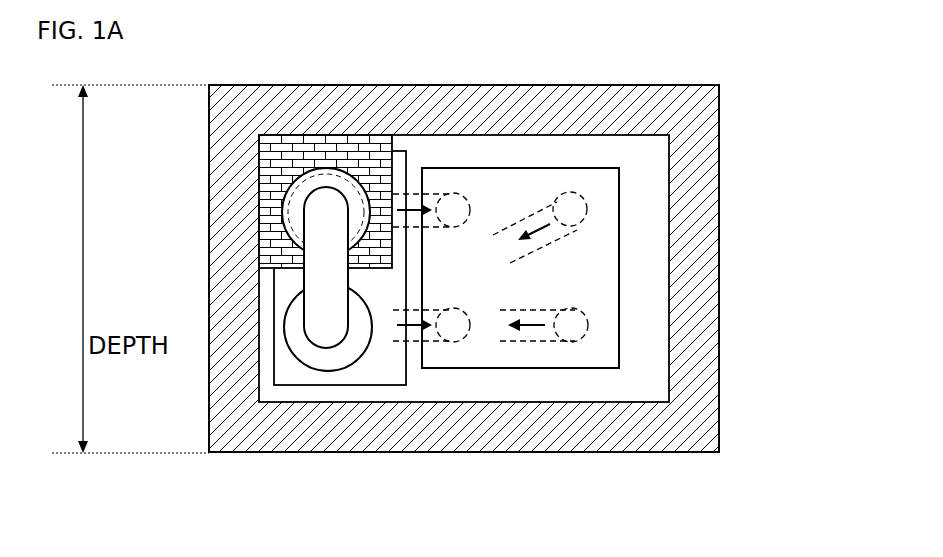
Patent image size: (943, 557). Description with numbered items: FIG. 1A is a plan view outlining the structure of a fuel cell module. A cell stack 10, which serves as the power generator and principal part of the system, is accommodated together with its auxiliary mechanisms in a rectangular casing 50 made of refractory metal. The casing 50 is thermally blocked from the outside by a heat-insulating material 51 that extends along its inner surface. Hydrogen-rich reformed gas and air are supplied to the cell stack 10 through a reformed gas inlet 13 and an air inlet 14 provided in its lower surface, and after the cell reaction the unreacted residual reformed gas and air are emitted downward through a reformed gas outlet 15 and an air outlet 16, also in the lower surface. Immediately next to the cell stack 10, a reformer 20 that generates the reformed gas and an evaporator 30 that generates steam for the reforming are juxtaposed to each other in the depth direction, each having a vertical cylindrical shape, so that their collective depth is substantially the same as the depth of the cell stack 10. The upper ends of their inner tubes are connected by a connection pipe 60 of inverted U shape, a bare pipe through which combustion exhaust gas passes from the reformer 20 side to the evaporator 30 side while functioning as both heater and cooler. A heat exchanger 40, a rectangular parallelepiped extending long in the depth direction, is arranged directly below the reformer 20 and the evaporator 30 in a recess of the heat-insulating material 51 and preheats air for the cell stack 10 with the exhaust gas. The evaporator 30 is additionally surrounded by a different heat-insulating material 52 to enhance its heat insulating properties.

The cell stack 10 is at (619, 271).
The reformed gas inlet 13 is at (472, 330).
The air inlet 14 is at (471, 207).
The reformed gas outlet 15 is at (586, 204).
The air outlet 16 is at (588, 322).
The reformer 20 is at (329, 372).
The evaporator 30 is at (265, 221).
The heat exchanger 40 is at (400, 387).
The casing 50 is at (719, 122).
The heat-insulating material 51 is at (273, 96).
The heat-insulating material 52 is at (355, 146).
The connection pipe 60 is at (313, 276).